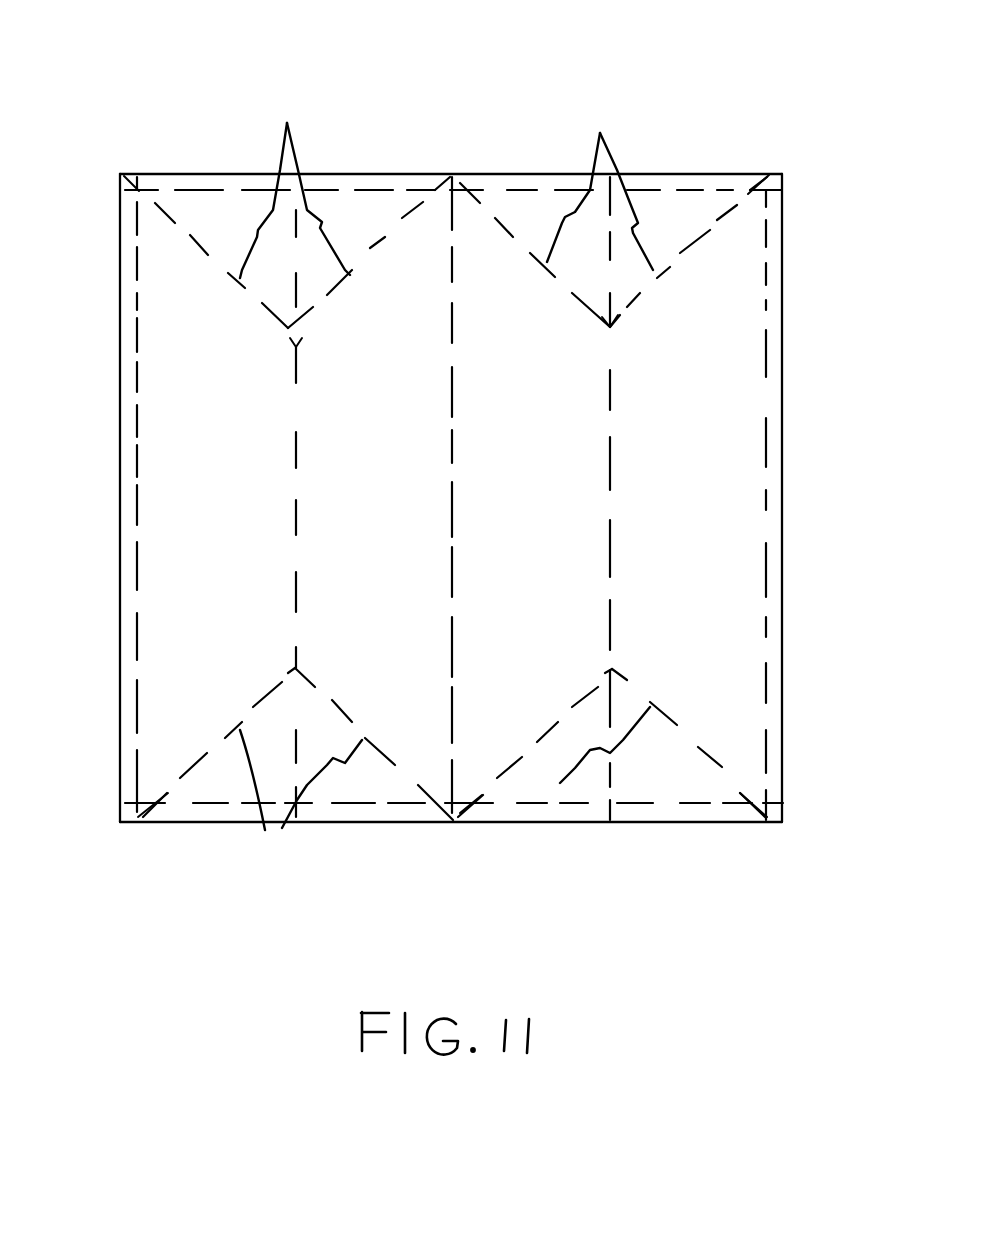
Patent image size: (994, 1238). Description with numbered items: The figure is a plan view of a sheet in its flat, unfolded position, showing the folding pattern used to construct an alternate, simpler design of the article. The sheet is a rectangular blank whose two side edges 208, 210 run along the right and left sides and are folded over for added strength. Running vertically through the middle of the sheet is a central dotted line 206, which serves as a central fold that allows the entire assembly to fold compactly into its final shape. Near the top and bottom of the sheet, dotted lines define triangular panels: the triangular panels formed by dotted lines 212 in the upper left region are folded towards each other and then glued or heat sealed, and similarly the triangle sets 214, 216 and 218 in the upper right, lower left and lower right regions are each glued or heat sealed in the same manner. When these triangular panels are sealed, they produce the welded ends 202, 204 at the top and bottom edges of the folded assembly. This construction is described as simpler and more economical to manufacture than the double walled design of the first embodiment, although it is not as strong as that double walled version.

The welded end 202 is at (660, 180).
The welded end 204 is at (663, 817).
The central dotted line 206 is at (453, 345).
The side edge 208 is at (773, 292).
The side edge 210 is at (132, 522).
The dotted lines 212 is at (295, 183).
The triangle set 214 is at (600, 182).
The triangle set 216 is at (265, 830).
The triangle set 218 is at (555, 733).